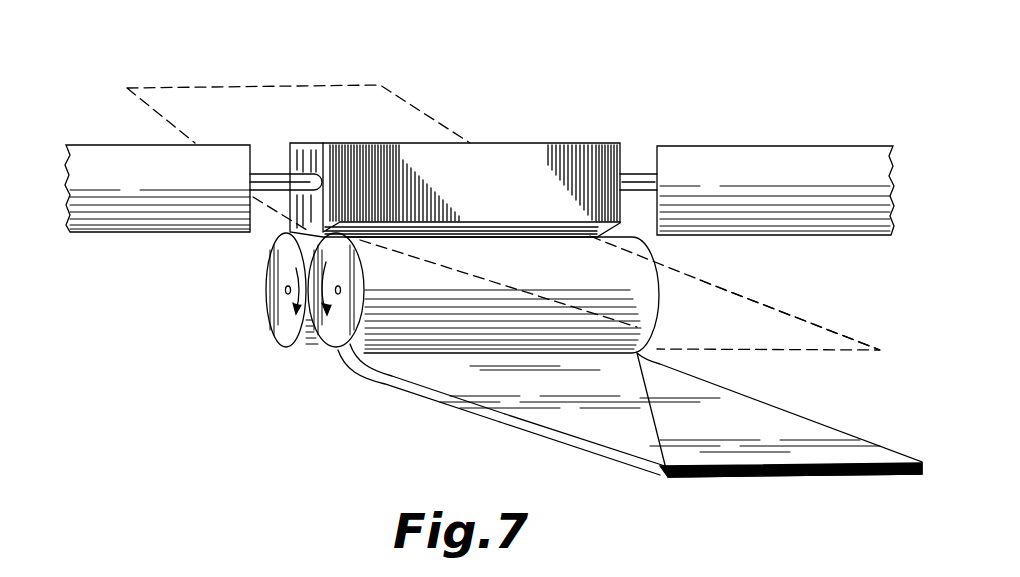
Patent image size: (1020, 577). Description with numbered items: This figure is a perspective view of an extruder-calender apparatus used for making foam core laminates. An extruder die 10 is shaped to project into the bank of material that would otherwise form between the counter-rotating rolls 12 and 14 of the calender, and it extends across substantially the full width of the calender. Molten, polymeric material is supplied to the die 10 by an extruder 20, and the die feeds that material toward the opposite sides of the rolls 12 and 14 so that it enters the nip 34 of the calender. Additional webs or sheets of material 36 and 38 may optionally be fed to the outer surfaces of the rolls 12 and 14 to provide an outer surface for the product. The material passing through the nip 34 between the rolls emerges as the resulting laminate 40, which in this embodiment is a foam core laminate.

The extruder die 10 is at (373, 141).
The calender roll 12 is at (283, 287).
The calender roll 14 is at (333, 332).
The extruder 20 is at (117, 242).
The nip 34 is at (438, 398).
The web or sheet of material 36 is at (291, 110).
The web or sheet of material 38 is at (752, 316).
The laminate 40 is at (560, 449).